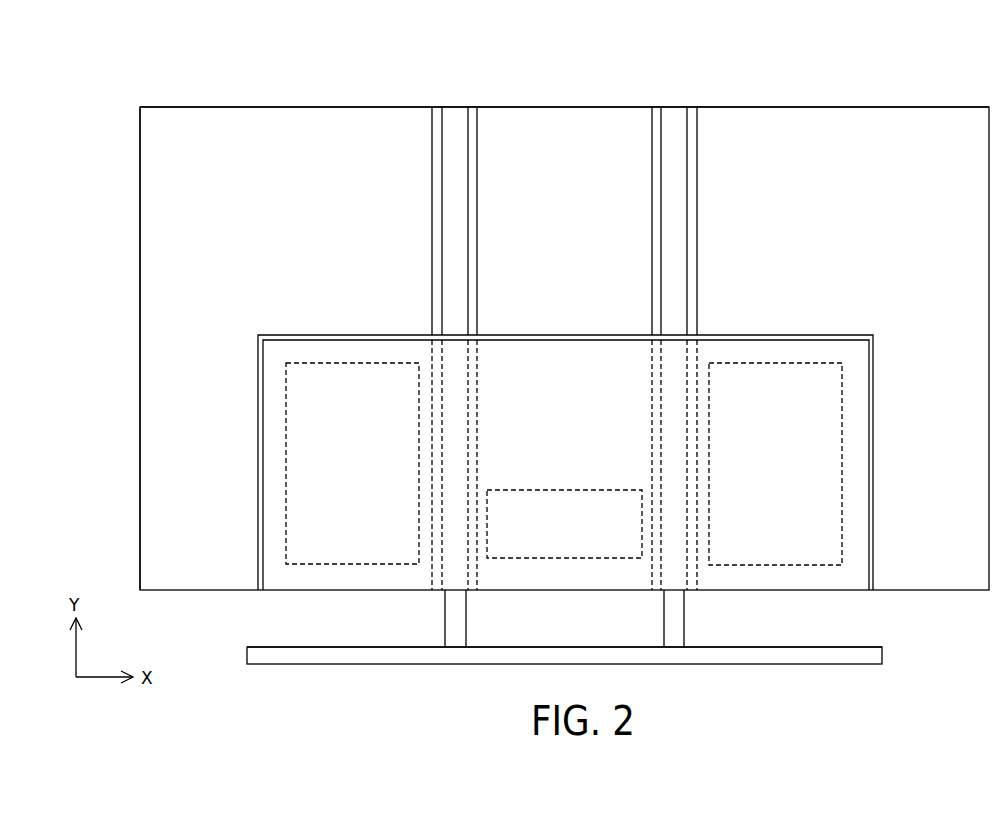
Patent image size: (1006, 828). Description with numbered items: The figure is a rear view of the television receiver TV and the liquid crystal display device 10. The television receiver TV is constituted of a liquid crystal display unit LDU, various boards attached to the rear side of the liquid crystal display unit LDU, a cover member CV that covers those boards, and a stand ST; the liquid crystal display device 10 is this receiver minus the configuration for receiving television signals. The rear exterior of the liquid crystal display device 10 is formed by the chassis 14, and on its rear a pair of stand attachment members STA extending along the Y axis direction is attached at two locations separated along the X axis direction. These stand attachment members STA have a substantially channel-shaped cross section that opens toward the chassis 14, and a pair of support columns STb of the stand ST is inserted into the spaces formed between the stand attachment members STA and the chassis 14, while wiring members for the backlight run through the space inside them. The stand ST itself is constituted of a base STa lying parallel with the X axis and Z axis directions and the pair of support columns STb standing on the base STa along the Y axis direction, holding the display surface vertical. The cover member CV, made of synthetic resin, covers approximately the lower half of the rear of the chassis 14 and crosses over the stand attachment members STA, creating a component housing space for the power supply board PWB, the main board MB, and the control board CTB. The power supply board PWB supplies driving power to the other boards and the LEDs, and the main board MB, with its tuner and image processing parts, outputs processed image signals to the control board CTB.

The television receiver TV is at (797, 68).
The liquid crystal display device 10 is at (865, 102).
The liquid crystal display unit LDU is at (208, 104).
The chassis 14 is at (326, 127).
The stand attachment members STA is at (453, 126).
The cover member CV is at (858, 506).
The power supply board PWB is at (325, 565).
The control board CTB is at (565, 560).
The main board MB is at (773, 566).
The support columns STb is at (453, 620).
The base STa is at (814, 650).
The stand ST is at (247, 656).